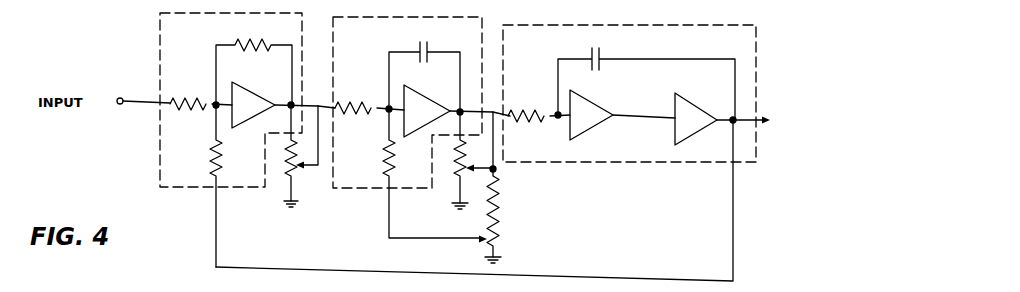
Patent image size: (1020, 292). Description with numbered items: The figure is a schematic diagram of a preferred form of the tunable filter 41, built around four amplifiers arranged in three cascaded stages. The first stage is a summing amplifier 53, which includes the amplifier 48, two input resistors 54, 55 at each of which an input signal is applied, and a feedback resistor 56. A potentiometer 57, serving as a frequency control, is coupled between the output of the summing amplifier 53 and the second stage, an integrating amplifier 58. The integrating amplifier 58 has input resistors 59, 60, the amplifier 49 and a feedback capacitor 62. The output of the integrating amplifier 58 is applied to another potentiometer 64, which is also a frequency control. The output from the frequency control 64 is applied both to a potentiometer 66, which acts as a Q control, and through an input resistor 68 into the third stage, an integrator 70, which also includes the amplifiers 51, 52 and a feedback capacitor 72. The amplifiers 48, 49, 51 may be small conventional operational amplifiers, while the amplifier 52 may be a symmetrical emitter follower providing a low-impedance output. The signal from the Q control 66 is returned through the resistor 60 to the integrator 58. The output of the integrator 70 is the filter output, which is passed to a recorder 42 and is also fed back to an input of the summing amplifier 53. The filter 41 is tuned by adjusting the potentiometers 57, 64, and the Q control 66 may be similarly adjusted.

The filter 41 is at (142, 70).
The recorder 42 is at (817, 132).
The amplifier 48 is at (246, 92).
The amplifier 49 is at (422, 102).
The amplifier 51 is at (592, 107).
The amplifier 52 is at (690, 110).
The summing amplifier 53 is at (200, 41).
The input resistor 54 is at (195, 98).
The input resistor 55 is at (210, 158).
The feedback resistor 56 is at (250, 45).
The potentiometer 57 is at (300, 190).
The integrating amplifier 58 is at (370, 41).
The input resistor 59 is at (356, 103).
The input resistor 60 is at (385, 163).
The feedback capacitor 62 is at (430, 50).
The potentiometer 64 is at (455, 183).
The potentiometer 66 is at (500, 248).
The input resistor 68 is at (540, 110).
The integrator 70 is at (540, 49).
The feedback capacitor 72 is at (602, 56).